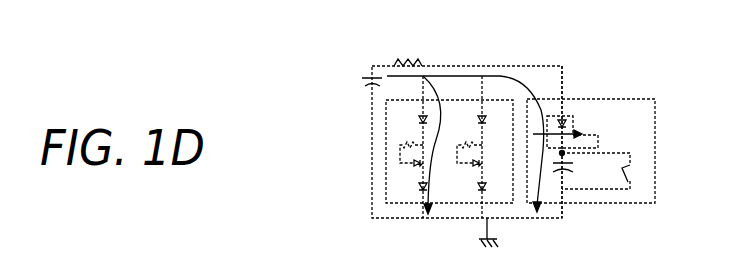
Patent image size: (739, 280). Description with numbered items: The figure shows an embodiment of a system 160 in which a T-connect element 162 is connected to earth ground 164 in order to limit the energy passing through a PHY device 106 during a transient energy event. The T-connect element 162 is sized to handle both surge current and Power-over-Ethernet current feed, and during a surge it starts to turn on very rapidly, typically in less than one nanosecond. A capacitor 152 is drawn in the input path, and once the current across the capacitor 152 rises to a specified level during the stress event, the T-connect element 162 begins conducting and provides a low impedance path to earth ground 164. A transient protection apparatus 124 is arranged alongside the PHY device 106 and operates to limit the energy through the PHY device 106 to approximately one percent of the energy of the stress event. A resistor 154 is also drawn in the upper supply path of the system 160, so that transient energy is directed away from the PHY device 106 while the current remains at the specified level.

The system 160 is at (578, 41).
The resistor 154 is at (408, 52).
The capacitor 152 is at (368, 86).
The T-connect element 162 is at (384, 152).
The PHY device 106 is at (580, 128).
The transient protection apparatus 124 is at (640, 172).
The earth ground 164 is at (480, 240).